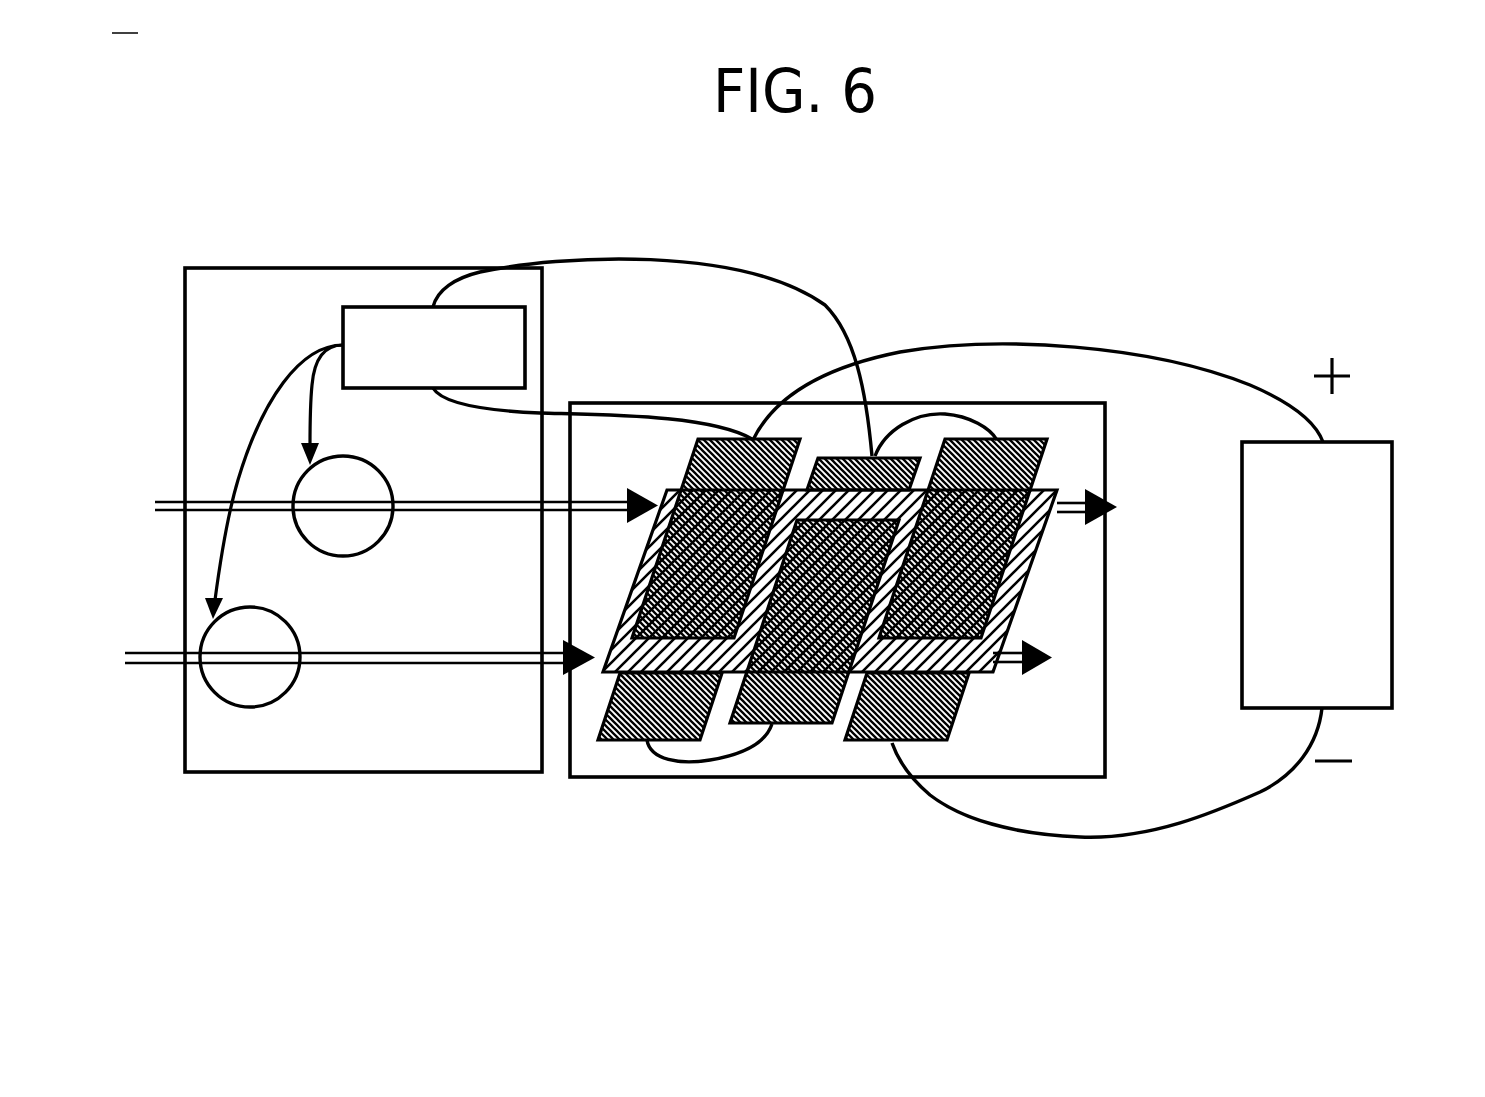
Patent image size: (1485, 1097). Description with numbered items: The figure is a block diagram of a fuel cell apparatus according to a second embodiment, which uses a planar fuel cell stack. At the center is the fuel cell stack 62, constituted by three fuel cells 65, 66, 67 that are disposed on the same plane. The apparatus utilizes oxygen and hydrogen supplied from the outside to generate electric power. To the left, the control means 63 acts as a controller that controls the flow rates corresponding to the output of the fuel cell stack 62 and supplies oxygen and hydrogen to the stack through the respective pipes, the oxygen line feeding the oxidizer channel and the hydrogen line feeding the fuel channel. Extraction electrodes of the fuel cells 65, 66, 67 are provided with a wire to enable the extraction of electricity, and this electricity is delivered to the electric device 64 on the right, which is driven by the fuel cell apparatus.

The fuel cell stack 62 is at (869, 680).
The control means 63 is at (340, 268).
The electric device 64 is at (1392, 478).
The fuel cell 65 is at (696, 608).
The fuel cell 66 is at (776, 680).
The fuel cell 67 is at (930, 612).